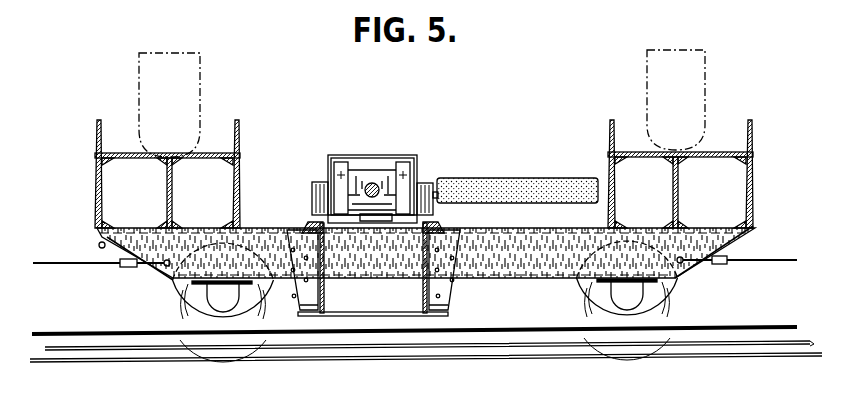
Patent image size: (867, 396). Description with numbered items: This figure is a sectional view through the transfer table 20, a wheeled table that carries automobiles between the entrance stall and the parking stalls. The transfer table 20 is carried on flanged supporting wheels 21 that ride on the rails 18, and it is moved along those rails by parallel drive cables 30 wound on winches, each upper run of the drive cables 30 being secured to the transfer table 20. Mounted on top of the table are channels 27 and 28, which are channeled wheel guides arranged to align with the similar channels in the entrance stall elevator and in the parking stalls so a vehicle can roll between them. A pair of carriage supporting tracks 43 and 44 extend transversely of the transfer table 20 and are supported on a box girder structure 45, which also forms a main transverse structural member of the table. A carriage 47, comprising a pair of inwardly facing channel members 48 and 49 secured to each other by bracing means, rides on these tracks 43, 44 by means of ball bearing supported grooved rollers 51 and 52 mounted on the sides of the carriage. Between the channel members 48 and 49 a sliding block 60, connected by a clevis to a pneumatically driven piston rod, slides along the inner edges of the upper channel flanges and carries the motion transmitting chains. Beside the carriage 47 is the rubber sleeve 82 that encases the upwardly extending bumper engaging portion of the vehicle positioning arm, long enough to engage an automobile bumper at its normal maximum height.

The rail 18 is at (780, 346).
The transfer table 20 is at (757, 212).
The flanged supporting wheel 21 is at (660, 300).
The channel 27 is at (203, 153).
The channel 28 is at (715, 150).
The drive cable 30 is at (50, 261).
The carriage supporting track 43 is at (312, 222).
The carriage supporting track 44 is at (436, 222).
The box girder structure 45 is at (322, 287).
The carriage 47 is at (333, 158).
The channel member 48 is at (340, 160).
The channel member 49 is at (405, 158).
The grooved roller 51 is at (318, 183).
The grooved roller 52 is at (430, 183).
The sliding block 60 is at (368, 165).
The rubber sleeve 82 is at (543, 178).